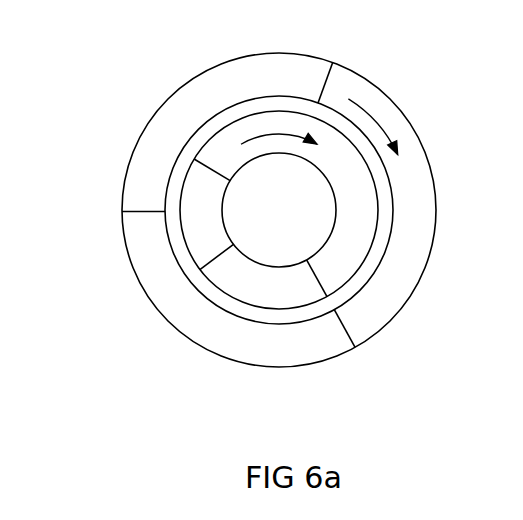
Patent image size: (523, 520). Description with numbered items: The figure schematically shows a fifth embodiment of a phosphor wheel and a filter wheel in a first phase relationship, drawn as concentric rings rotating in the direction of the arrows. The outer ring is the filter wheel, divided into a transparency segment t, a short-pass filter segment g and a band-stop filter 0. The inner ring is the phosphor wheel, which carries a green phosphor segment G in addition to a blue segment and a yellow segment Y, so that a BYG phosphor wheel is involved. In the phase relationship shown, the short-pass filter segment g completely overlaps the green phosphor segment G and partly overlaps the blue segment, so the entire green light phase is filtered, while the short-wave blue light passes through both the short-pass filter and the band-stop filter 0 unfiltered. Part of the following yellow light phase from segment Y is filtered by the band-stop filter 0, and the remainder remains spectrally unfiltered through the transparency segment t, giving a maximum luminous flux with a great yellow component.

The band-stop filter 0 is at (178, 107).
The transparency segment t is at (352, 82).
The short-pass filter segment g is at (213, 347).
The green phosphor segment G is at (283, 290).
The yellow phosphor segment Y is at (348, 238).